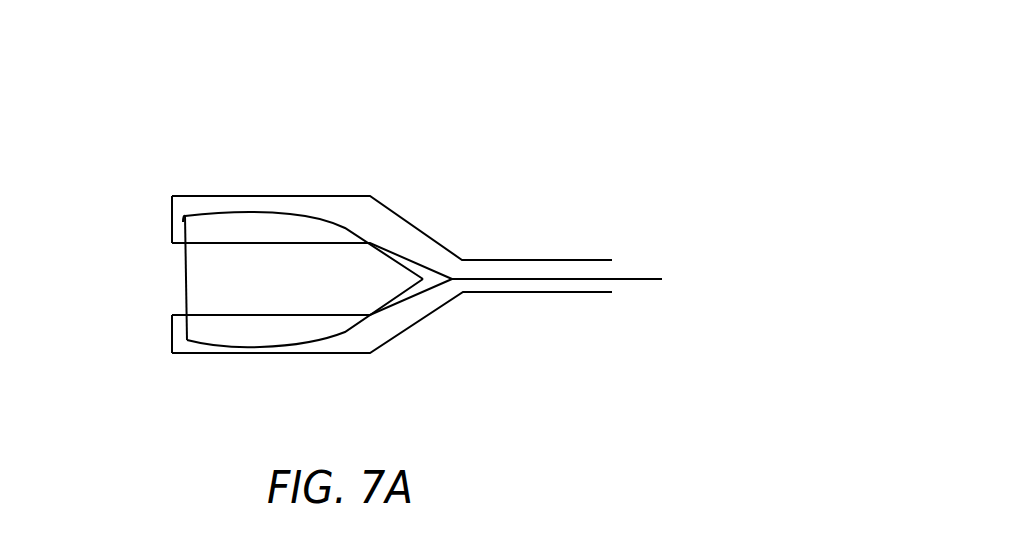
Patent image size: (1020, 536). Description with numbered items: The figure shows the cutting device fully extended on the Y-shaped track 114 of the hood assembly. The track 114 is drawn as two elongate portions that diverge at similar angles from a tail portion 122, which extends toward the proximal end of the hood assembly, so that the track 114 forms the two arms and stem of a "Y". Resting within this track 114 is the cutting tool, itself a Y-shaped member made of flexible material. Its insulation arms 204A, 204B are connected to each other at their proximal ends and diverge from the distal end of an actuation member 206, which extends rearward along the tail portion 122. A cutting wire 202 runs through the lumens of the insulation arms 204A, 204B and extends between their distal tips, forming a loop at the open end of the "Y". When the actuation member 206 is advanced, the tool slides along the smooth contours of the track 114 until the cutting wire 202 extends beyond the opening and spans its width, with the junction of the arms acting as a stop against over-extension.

The track 114 is at (183, 205).
The tail portion 122 is at (517, 259).
The cutting wire 202 is at (237, 262).
The insulation arm 204A is at (273, 213).
The insulation arm 204B is at (247, 347).
The actuation member 206 is at (526, 278).